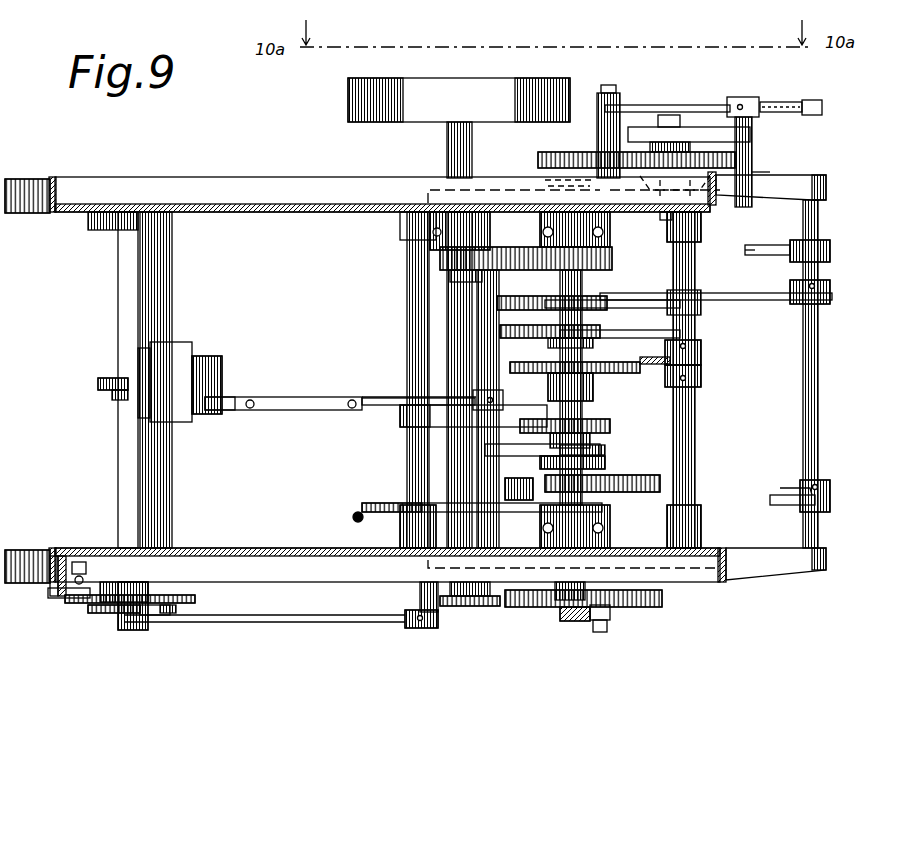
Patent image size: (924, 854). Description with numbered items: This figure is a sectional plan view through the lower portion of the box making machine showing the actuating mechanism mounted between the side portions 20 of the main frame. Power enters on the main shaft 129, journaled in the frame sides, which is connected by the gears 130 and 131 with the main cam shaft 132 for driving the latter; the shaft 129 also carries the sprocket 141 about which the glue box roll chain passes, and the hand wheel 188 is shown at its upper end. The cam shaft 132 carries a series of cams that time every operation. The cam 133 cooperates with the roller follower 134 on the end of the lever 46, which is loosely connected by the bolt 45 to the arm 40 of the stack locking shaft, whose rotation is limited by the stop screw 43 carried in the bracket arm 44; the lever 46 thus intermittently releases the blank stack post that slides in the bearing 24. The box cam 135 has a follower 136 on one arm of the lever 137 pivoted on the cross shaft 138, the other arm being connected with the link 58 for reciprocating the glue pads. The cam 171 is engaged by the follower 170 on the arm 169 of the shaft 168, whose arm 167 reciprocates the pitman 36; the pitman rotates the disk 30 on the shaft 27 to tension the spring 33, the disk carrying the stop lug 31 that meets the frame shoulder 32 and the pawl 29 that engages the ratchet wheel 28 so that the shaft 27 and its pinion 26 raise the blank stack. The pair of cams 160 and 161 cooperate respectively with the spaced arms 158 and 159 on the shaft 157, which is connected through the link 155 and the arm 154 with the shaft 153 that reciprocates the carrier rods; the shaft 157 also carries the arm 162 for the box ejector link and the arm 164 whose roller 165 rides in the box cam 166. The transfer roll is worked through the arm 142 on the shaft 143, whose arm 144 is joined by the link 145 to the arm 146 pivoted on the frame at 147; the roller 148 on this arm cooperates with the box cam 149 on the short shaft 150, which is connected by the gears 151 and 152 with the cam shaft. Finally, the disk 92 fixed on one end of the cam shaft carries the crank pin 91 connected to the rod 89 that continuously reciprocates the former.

The side portions 20 is at (292, 212).
The hand wheel 188 is at (402, 118).
The shaft 129 is at (474, 140).
The shaft 168 is at (412, 470).
The gear 130 is at (450, 260).
The gear 131 is at (636, 250).
The cam 160 is at (600, 272).
The cross shaft 138 is at (496, 306).
The arm 158 is at (612, 313).
The link 155 is at (758, 300).
The arm 159 is at (660, 322).
The cam 161 is at (522, 335).
The roller 165 is at (585, 366).
The box cam 166 is at (610, 380).
The cam 171 is at (612, 426).
The main cam shaft 132 is at (598, 441).
The roller follower 134 is at (560, 450).
The cam 133 is at (606, 460).
The box cam 135 is at (660, 478).
The follower 136 is at (520, 486).
The follower 170 is at (500, 398).
The arm 169 is at (440, 428).
The arm 40 is at (318, 408).
The bolt 45 is at (355, 398).
The lever 46 is at (385, 396).
The bracket arm 44 is at (240, 405).
The stop screw 43 is at (250, 410).
The bearing 24 is at (130, 420).
The pinion 26 is at (100, 386).
The shaft 27 is at (122, 292).
The lever 137 is at (395, 510).
The link 58 is at (352, 518).
The shaft 157 is at (684, 260).
The arm 162 is at (700, 356).
The arm 164 is at (635, 372).
The shaft 153 is at (818, 230).
The arm 154 is at (830, 304).
The arm 142 is at (768, 252).
The gear 151 is at (712, 195).
The pivot 147 is at (615, 90).
The arm 146 is at (656, 106).
The short shaft 150 is at (672, 115).
The roller 148 is at (708, 100).
The arm 144 is at (780, 98).
The link 145 is at (786, 112).
The box cam 149 is at (628, 137).
The gear 152 is at (538, 160).
The shaft 143 is at (760, 172).
The sprocket 141 is at (482, 606).
The arm 167 is at (418, 625).
The pitman 36 is at (298, 618).
The disk 92 is at (662, 600).
The rod 89 is at (568, 617).
The crank pin 91 is at (604, 628).
The shoulder 32 is at (52, 560).
The tension spring 33 is at (80, 562).
The stop lug 31 is at (62, 598).
The disk 30 is at (195, 598).
The ratchet wheel 28 is at (95, 612).
The pawl 29 is at (160, 600).